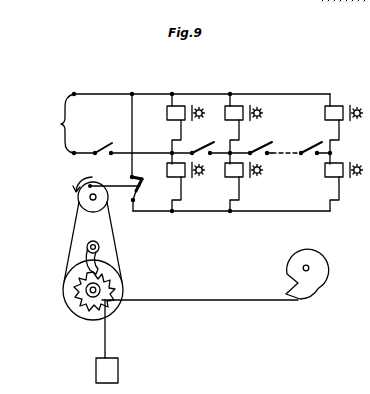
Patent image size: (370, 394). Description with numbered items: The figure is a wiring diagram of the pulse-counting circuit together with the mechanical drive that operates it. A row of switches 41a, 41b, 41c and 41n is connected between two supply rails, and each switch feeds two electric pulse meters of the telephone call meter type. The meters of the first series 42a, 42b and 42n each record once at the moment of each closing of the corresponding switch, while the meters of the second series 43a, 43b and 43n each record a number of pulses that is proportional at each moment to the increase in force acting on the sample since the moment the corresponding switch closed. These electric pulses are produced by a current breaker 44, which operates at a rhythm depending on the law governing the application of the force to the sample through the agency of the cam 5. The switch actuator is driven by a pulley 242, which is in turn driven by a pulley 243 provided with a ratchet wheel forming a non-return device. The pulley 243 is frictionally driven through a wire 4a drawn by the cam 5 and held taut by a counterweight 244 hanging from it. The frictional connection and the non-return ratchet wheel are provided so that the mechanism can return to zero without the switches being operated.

The switch 41a is at (103, 148).
The switch 41b is at (205, 148).
The switch 41c is at (262, 148).
The switch 41n is at (311, 148).
The electric pulse meter 42a is at (175, 116).
The electric pulse meter 42b is at (236, 116).
The electric pulse meter 42n is at (336, 112).
The electric pulse meter 43a is at (177, 177).
The electric pulse meter 43b is at (236, 177).
The electric pulse meter 43n is at (336, 177).
The current breaker 44 is at (138, 193).
The pulley 242 is at (79, 198).
The pulley 243 is at (112, 305).
The counterweight 244 is at (96, 373).
The wire 4a is at (199, 298).
The cam 5 is at (325, 282).